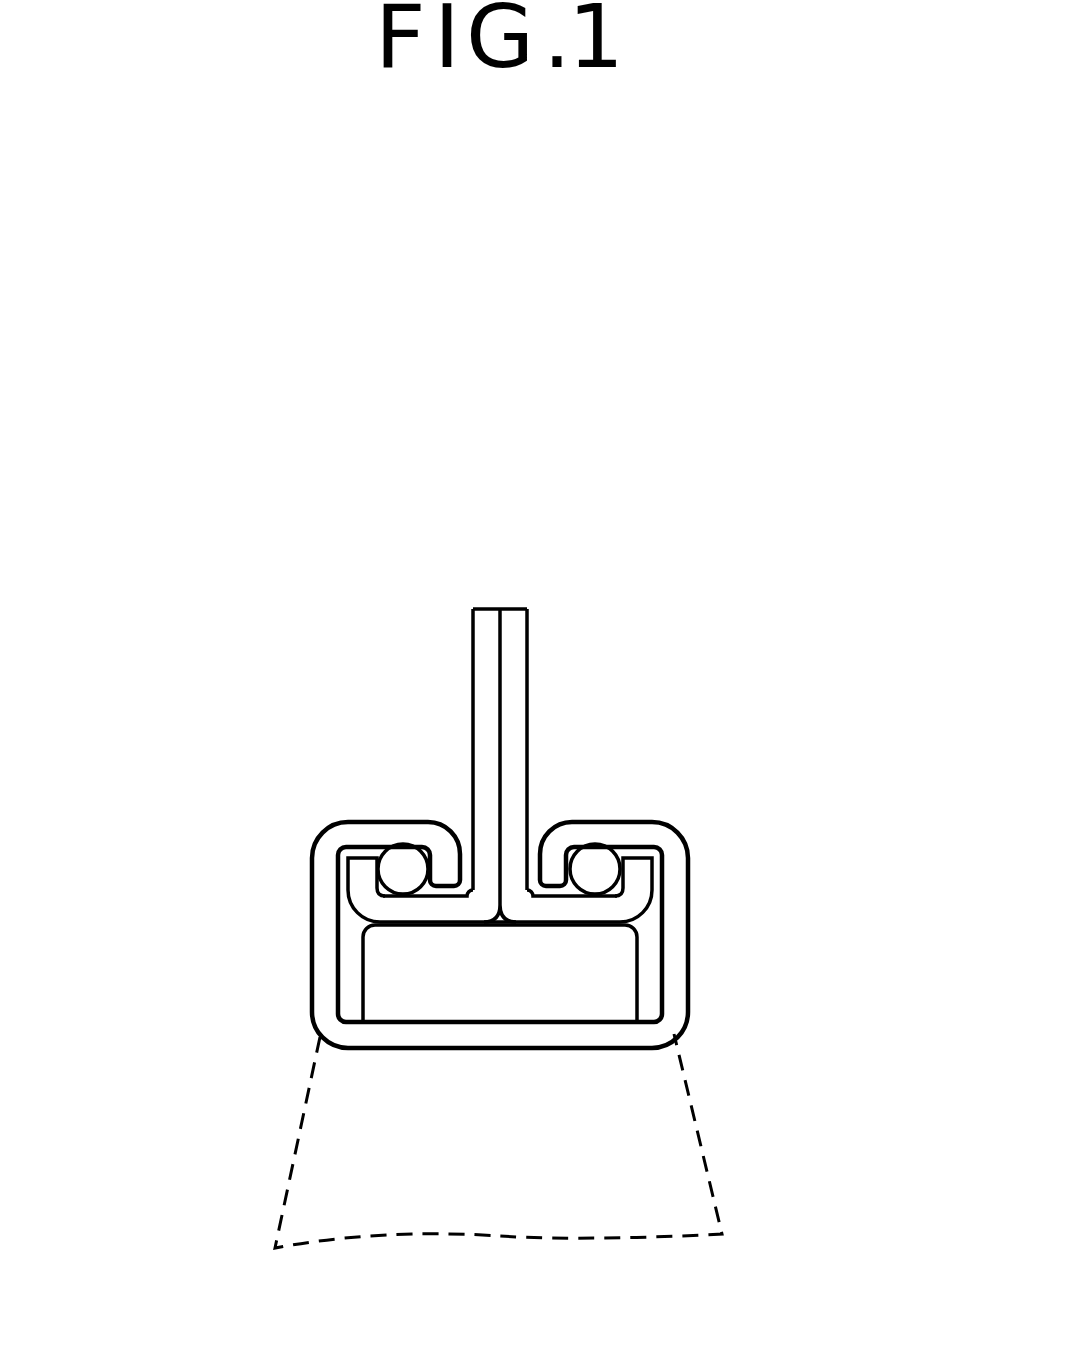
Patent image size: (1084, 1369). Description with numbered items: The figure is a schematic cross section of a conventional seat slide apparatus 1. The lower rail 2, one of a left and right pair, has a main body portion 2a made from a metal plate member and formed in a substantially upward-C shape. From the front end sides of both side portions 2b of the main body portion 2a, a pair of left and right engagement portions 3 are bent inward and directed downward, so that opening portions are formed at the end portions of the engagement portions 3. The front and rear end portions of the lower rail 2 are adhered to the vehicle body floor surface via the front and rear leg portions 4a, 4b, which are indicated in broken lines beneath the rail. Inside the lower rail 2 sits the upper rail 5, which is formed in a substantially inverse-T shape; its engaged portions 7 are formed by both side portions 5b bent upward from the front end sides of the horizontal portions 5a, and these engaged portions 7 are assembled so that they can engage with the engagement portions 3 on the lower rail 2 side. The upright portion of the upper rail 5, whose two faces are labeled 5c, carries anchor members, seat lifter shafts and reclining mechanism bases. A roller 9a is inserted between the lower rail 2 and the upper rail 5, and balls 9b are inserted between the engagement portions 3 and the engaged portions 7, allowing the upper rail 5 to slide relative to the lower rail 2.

The seat slide apparatus 1 is at (240, 718).
The lower rail 2 is at (295, 951).
The main body portion 2a is at (460, 1033).
The side portion 2b is at (317, 873).
The engagement portion 3 is at (403, 823).
The front leg portion 4a is at (607, 1141).
The rear leg portion 4b is at (650, 1137).
The upper rail 5 is at (545, 711).
The horizontal portion 5a is at (402, 900).
The side portion 5b is at (362, 892).
The side surface of insert tab 5c is at (472, 642).
The engaged portion 7 is at (822, 824).
The roller 9a is at (617, 990).
The ball 9b is at (393, 858).